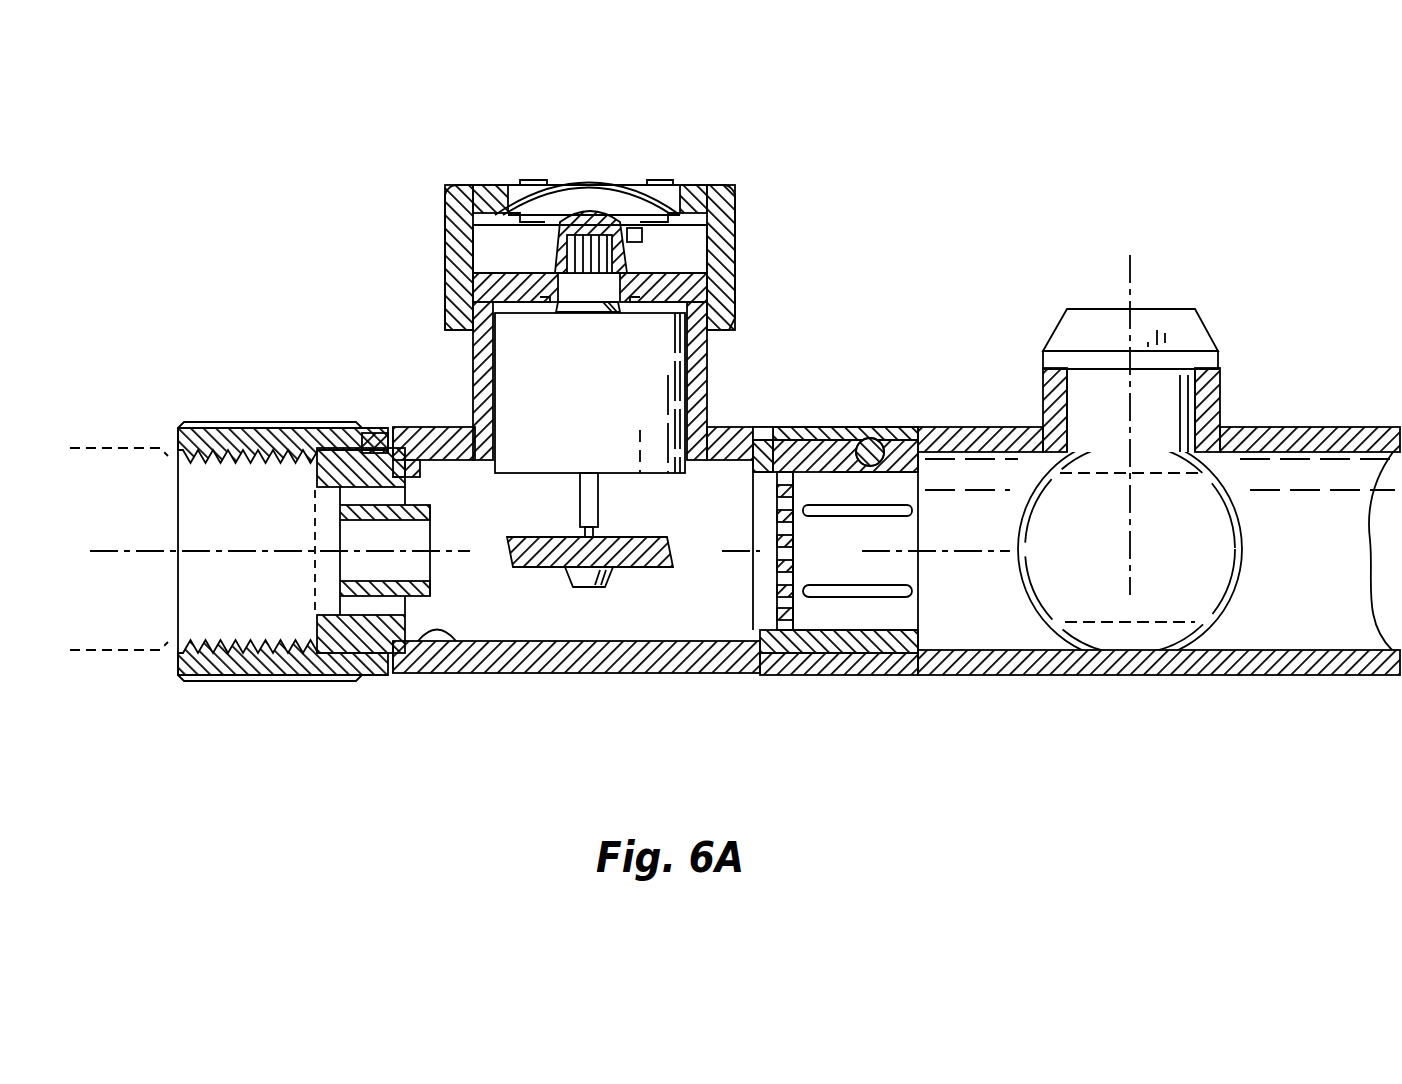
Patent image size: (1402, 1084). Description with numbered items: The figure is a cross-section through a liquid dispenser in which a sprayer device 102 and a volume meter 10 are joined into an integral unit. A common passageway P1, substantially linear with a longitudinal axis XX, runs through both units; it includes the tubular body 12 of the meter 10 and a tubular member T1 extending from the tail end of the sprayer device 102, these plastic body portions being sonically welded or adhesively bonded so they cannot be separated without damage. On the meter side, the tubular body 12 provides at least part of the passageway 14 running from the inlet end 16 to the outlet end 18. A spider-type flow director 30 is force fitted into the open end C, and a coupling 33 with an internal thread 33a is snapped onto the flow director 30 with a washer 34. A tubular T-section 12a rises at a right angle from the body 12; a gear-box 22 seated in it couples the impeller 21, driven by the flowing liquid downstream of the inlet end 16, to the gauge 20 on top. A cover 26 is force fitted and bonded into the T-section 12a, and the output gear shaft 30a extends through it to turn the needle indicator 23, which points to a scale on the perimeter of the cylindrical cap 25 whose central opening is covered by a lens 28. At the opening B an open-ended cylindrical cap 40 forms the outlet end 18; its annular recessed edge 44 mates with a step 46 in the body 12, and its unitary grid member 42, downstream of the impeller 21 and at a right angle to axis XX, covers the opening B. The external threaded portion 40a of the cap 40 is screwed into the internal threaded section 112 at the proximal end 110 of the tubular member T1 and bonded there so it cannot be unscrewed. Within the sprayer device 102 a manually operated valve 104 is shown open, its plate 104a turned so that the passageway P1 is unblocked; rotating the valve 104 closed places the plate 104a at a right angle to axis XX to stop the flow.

The volume meter 10 is at (790, 195).
The tubular body 12 is at (438, 682).
The T-section 12a is at (473, 397).
The passageway 14 is at (693, 600).
The inlet end 16 is at (178, 437).
The outlet end 18 is at (932, 425).
The gauge 20 is at (748, 250).
The impeller 21 is at (630, 575).
The gear-box 22 is at (612, 408).
The needle indicator 23 is at (640, 232).
The cylindrical cap 25 is at (713, 192).
The cover 26 is at (535, 273).
The lens 28 is at (570, 187).
The flow director 30 is at (375, 440).
The output gear shaft 30a is at (602, 222).
The coupling 33 is at (213, 432).
The internal thread 33a is at (245, 458).
The washer 34 is at (283, 448).
The cap 40 is at (742, 578).
The external threaded portion 40a is at (870, 650).
The grid member 42 is at (835, 425).
The annular recessed edge 44 is at (770, 425).
The step 46 is at (418, 572).
The sprayer device 102 is at (1325, 680).
The manually operated valve 104 is at (1168, 302).
The plate 104a is at (1188, 582).
The proximal end 110 is at (1010, 425).
The internal threaded section 112 is at (870, 425).
The opening B is at (763, 612).
The opening C is at (420, 604).
The common passageway P1 is at (1000, 595).
The tubular member T1 is at (1333, 425).
The longitudinal axis XX is at (118, 553).